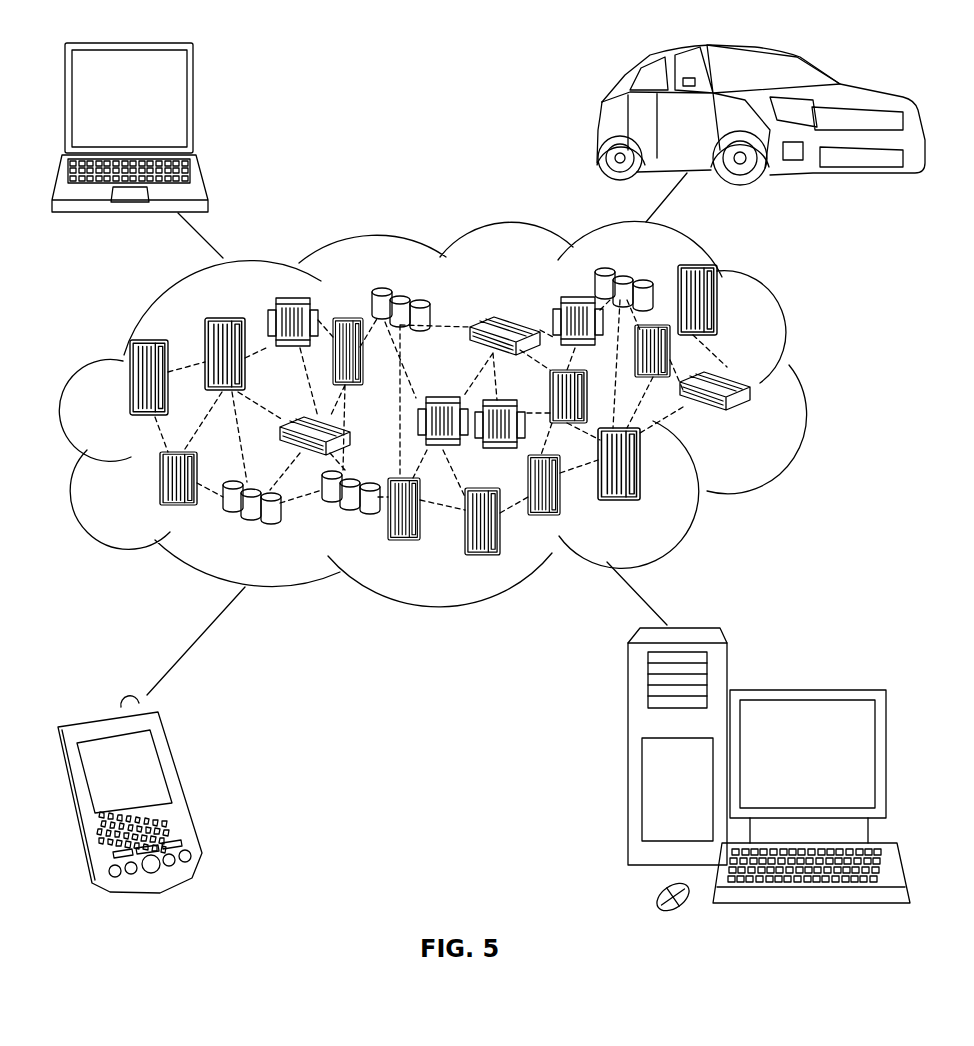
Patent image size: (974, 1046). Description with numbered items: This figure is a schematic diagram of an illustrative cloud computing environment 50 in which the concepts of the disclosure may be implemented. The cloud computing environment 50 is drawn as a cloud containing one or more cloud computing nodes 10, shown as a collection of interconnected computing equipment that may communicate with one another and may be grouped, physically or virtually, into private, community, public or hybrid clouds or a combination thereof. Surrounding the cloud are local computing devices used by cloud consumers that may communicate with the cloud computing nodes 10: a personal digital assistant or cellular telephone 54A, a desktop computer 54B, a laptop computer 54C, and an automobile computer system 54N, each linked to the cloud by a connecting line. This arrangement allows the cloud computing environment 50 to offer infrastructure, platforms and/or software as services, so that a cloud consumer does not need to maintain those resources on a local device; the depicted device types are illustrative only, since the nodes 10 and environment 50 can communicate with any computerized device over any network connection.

The cloud computing nodes 10 is at (760, 428).
The cloud computing environment 50 is at (808, 388).
The personal digital assistant (PDA) or cellular telephone 54A is at (187, 783).
The desktop computer 54B is at (805, 690).
The laptop computer 54C is at (195, 106).
The automobile computer system 54N is at (602, 117).